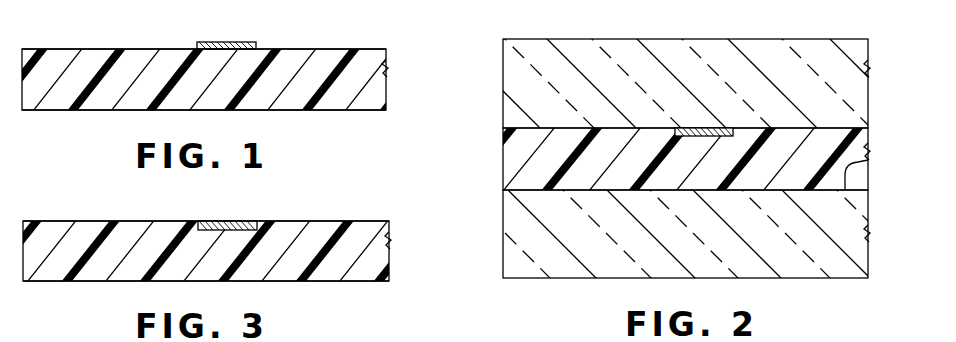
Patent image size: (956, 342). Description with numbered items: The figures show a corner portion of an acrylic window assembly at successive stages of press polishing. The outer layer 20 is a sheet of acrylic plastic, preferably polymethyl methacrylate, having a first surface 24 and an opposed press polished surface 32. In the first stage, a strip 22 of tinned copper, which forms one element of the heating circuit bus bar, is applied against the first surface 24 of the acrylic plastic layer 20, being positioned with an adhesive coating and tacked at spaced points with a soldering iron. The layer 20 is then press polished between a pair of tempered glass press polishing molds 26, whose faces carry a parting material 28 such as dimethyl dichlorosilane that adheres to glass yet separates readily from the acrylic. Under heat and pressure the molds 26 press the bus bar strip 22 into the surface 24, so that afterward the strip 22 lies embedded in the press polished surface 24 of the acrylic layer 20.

In FIG. 1, the outer layer of acrylic plastic 20 is at (392, 67).
In FIG. 3, the outer layer of acrylic plastic 20 is at (394, 238).
In FIG. 1, the bus bar strip 22 is at (225, 42).
In FIG. 3, the bus bar strip 22 is at (227, 221).
In FIG. 1, the first surface 24 is at (325, 49).
In FIG. 3, the first surface 24 is at (320, 221).
In FIG. 1, the press polished surface 32 is at (208, 110).
In FIG. 3, the press polished surface 32 is at (205, 281).
In FIG. 2, the press polishing molds 26 is at (503, 52).
In FIG. 2, the parting material 28 is at (869, 157).